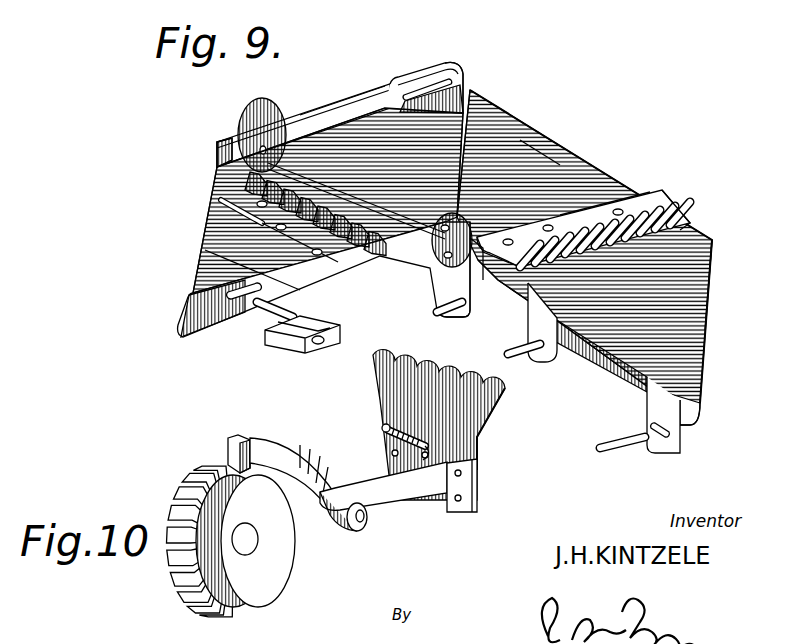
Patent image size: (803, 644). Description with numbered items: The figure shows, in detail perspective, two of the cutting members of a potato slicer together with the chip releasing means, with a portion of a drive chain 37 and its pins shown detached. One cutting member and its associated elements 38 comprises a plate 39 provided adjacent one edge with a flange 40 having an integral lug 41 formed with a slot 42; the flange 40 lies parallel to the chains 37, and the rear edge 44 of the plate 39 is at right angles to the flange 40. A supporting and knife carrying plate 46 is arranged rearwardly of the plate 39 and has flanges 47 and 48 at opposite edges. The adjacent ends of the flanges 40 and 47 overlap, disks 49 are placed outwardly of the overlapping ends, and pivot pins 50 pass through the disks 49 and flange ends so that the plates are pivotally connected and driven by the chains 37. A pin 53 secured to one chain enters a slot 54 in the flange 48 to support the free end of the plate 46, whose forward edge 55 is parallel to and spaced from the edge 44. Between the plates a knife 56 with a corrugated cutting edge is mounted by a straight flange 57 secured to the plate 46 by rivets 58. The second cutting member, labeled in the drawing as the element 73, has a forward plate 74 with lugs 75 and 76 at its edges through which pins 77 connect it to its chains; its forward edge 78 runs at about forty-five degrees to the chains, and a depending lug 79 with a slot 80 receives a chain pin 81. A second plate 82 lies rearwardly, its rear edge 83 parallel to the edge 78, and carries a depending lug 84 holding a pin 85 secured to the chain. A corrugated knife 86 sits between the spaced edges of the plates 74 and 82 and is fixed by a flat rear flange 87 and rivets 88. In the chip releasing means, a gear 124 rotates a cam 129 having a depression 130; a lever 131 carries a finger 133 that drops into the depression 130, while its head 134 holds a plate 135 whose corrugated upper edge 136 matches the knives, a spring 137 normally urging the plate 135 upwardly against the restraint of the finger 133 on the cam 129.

In FIG. 9, the chain 37 is at (302, 349).
In FIG. 9, the cutting member and associated elements 38 is at (347, 114).
In FIG. 9, the plate 39 is at (373, 151).
In FIG. 9, the flange 40 is at (301, 129).
In FIG. 9, the lug 41 is at (424, 75).
In FIG. 9, the slot 42 is at (460, 75).
In FIG. 9, the rear edge 44 is at (356, 246).
In FIG. 9, the supporting and knife carrying plate 46 is at (313, 200).
In FIG. 9, the flange 47 is at (215, 142).
In FIG. 9, the flange 48 is at (463, 140).
In FIG. 9, the disk 49 is at (355, 204).
In FIG. 9, the pivot pin 50 is at (356, 219).
In FIG. 9, the pin 53 is at (263, 325).
In FIG. 9, the slot 54 is at (236, 324).
In FIG. 9, the forward edge 55 is at (279, 214).
In FIG. 9, the cutting member or knife 56 is at (356, 240).
In FIG. 9, the straight flange 57 is at (250, 226).
In FIG. 9, the rivets 58 is at (229, 265).
In FIG. 9, the rack plate 73 is at (572, 159).
In FIG. 9, the forward plate 74 is at (598, 257).
In FIG. 9, the lug 75 is at (724, 285).
In FIG. 9, the lug 76 is at (527, 322).
In FIG. 9, the pins 77 is at (528, 368).
In FIG. 9, the forward edge 78 is at (705, 399).
In FIG. 9, the depending lug 79 is at (645, 415).
In FIG. 9, the slot 80 is at (642, 435).
In FIG. 9, the pin 81 is at (622, 456).
In FIG. 9, the second plate 82 is at (540, 138).
In FIG. 9, the rear edge 83 is at (496, 153).
In FIG. 9, the depending lug 84 is at (464, 284).
In FIG. 9, the pin 85 is at (449, 324).
In FIG. 9, the corrugated knife 86 is at (682, 210).
In FIG. 9, the flat rear flange 87 is at (605, 191).
In FIG. 9, the rivets 88 is at (605, 200).
In FIG. 10, the gear 124 is at (196, 537).
In FIG. 10, the cam 129 is at (270, 563).
In FIG. 10, the depression 130 is at (223, 547).
In FIG. 10, the lever 131 is at (293, 465).
In FIG. 10, the finger 133 is at (248, 438).
In FIG. 10, the head 134 is at (398, 497).
In FIG. 10, the plate 135 is at (509, 429).
In FIG. 10, the corrugated upper edge 136 is at (423, 425).
In FIG. 10, the spring 137 is at (385, 442).